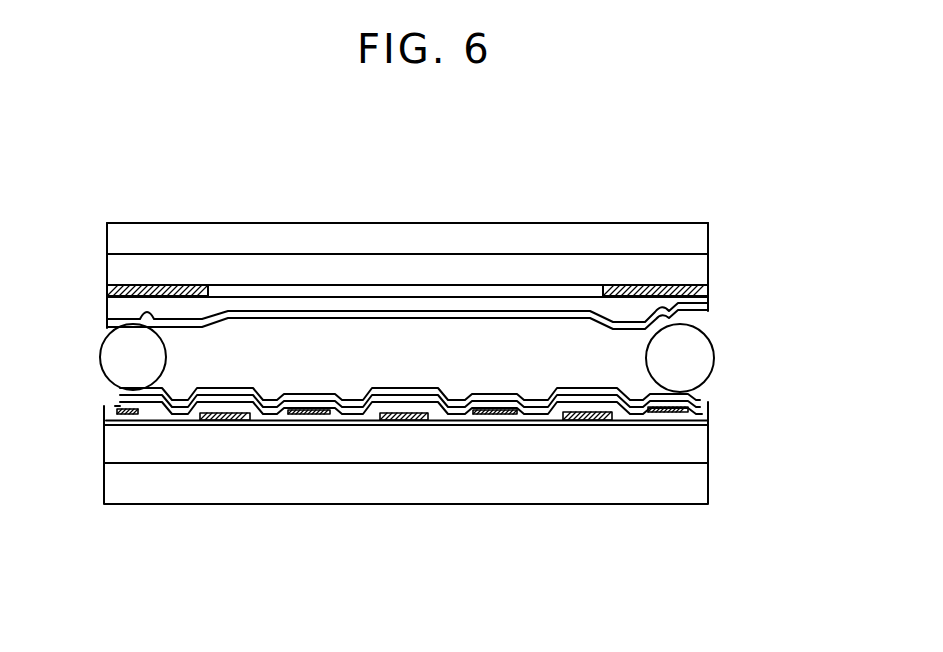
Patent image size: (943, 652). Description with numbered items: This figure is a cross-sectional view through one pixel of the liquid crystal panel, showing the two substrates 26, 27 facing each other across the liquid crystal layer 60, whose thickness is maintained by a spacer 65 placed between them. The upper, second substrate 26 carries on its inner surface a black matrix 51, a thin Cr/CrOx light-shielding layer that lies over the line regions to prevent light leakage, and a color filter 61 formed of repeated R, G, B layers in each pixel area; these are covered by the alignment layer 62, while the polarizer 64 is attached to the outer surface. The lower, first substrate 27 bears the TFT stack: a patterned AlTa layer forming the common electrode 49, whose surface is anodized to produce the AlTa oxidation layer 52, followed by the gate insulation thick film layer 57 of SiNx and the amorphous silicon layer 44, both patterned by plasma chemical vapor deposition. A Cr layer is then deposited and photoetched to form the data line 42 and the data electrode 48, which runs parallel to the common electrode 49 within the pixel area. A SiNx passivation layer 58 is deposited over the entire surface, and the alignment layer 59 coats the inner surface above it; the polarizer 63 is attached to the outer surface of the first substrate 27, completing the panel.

The second substrate 26 is at (697, 268).
The first substrate 27 is at (692, 447).
The data line 42 is at (122, 396).
The amorphous silicon layer 44 is at (130, 423).
The data electrode 48 is at (487, 422).
The common electrode 49 is at (223, 423).
The black matrix 51 is at (118, 285).
The AlTa oxidation layer 52 is at (250, 423).
The gate insulation thick film layer 57 is at (118, 421).
The passivation layer 58 is at (690, 390).
The alignment layer 59 is at (703, 398).
The liquid crystal layer 60 is at (328, 370).
The color filter 61 is at (700, 306).
The alignment layer 62 is at (668, 303).
The polarizer 63 is at (692, 493).
The polarizer 64 is at (688, 232).
The spacer 65 is at (110, 350).